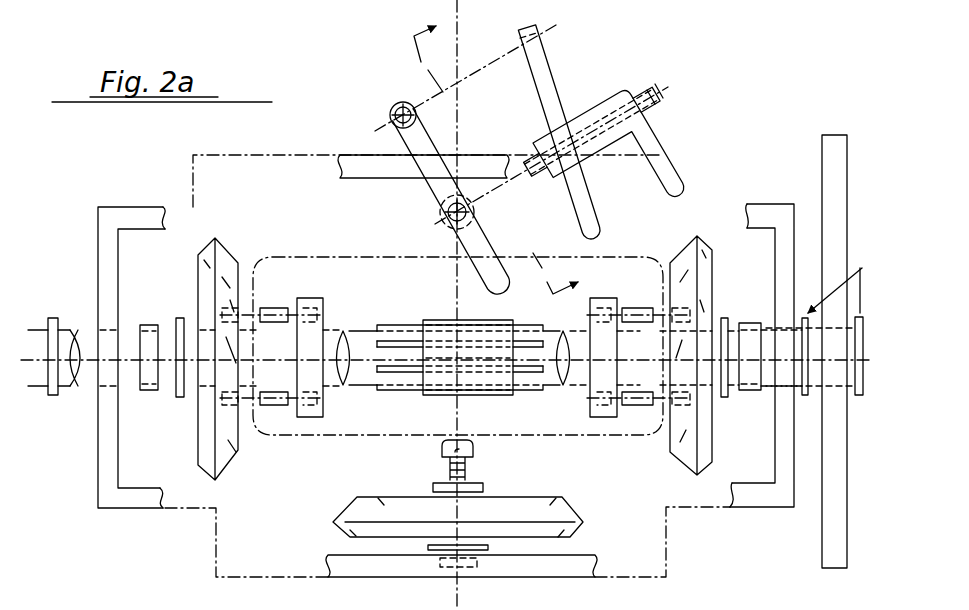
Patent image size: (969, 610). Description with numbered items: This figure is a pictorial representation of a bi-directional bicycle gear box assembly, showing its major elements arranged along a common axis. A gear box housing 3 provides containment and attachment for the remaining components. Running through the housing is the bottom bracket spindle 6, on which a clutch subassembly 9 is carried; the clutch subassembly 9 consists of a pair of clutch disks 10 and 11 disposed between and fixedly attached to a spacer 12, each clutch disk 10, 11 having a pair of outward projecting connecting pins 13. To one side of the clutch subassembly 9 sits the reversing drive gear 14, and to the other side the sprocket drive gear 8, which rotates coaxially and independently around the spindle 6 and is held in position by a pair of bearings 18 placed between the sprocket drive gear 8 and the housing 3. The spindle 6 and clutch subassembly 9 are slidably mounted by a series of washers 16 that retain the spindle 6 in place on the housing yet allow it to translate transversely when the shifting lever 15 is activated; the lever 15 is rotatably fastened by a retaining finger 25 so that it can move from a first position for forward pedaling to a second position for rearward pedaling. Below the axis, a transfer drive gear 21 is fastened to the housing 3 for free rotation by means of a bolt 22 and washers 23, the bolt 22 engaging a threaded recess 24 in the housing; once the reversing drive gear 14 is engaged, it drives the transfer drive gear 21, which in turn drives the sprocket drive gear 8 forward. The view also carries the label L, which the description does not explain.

The gear box housing 3 is at (383, 150).
The bottom bracket spindle 6 is at (37, 391).
The sprocket drive gear 8 is at (673, 461).
The clutch subassembly 9 is at (332, 256).
The clutch disk 10 is at (597, 296).
The clutch disk 11 is at (316, 297).
The spacer 12 is at (478, 397).
The connecting pins 13 is at (273, 326).
The reversing drive gear 14 is at (230, 470).
The shifting lever 15 is at (406, 100).
The washers 16 is at (180, 402).
The bearings 18 is at (147, 323).
The transfer drive gear 21 is at (410, 495).
The bolt 22 is at (480, 452).
The washers 23 is at (438, 480).
The threaded recess 24 is at (481, 566).
The retaining finger 25 is at (445, 216).
The load L is at (868, 524).